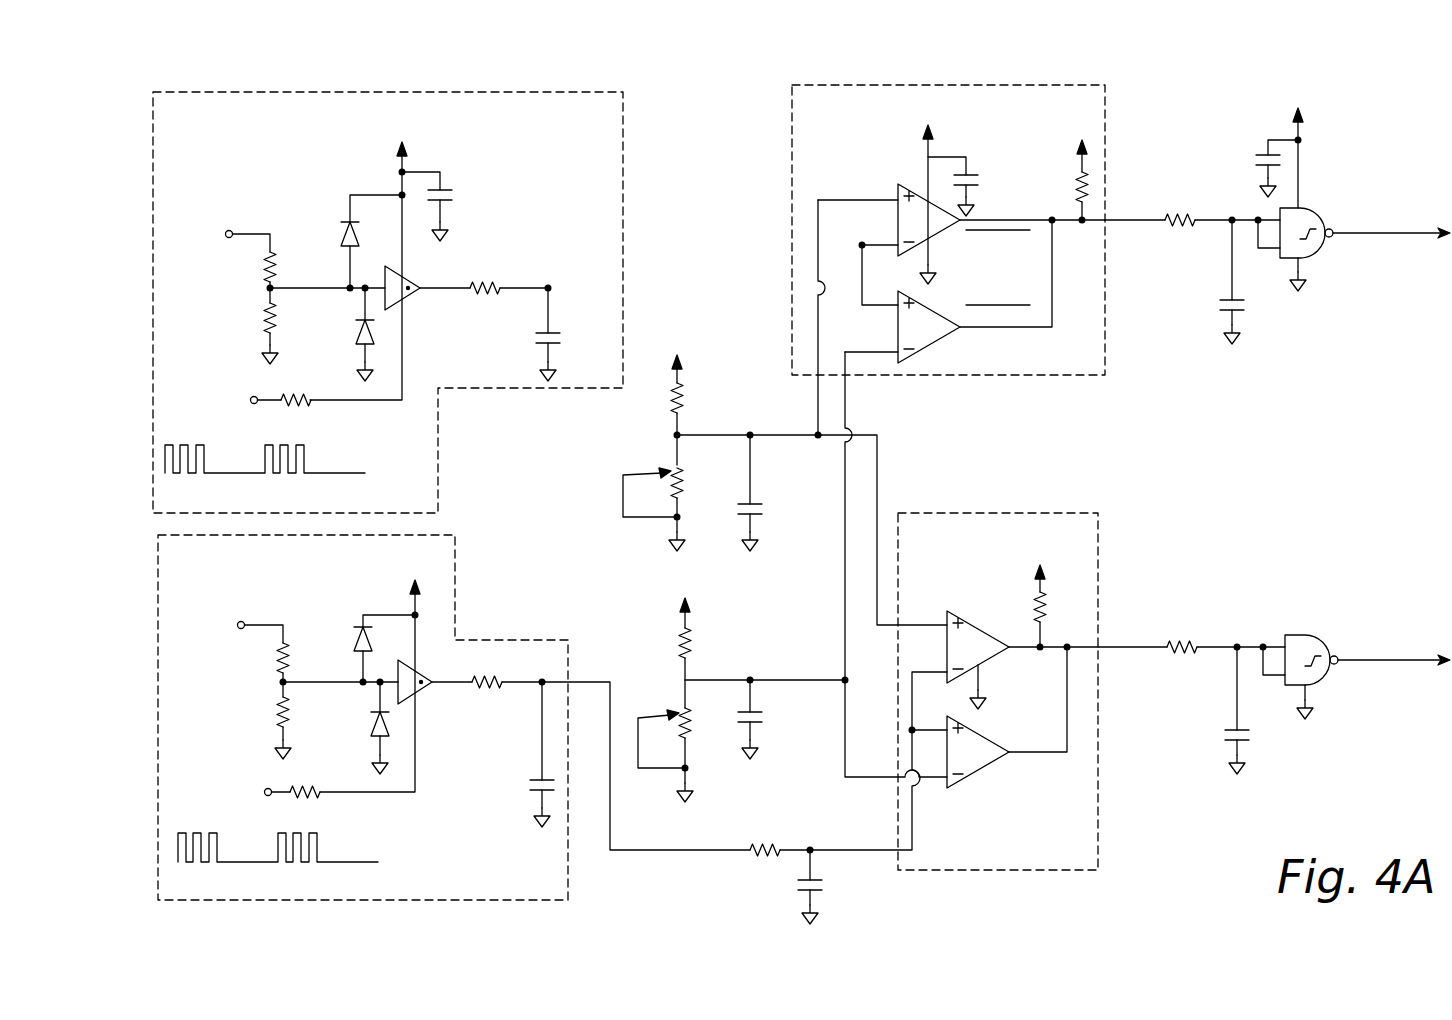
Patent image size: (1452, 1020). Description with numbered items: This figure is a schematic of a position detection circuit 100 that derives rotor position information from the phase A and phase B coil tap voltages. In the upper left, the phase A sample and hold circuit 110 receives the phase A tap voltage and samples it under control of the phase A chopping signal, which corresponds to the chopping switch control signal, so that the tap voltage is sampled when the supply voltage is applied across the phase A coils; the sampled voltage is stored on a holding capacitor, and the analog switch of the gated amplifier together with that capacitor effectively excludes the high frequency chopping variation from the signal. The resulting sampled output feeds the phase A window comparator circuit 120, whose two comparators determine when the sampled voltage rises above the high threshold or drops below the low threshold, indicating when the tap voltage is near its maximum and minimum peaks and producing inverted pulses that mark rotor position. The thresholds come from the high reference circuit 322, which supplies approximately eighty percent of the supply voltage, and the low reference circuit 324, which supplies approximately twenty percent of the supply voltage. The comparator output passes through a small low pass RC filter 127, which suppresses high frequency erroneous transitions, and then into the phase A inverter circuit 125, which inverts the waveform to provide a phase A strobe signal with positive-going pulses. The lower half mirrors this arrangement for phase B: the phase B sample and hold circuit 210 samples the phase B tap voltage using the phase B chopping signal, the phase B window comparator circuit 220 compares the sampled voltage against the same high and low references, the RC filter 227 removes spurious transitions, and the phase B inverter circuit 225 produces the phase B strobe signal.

The position detection circuit 100 is at (295, 92).
The phase A sample and hold circuit 110 is at (519, 90).
The phase A window comparator circuit 120 is at (1110, 130).
The phase A inverter circuit 125 is at (1360, 168).
The low pass (RC) filter 127 is at (1146, 250).
The phase B sample and hold circuit 210 is at (465, 583).
The phase B window comparator circuit 220 is at (1107, 559).
The phase B inverter circuit 225 is at (1365, 598).
The low pass (RC) filter 227 is at (1197, 776).
The HiRef circuit 322 is at (623, 501).
The LoRef circuit 324 is at (641, 701).